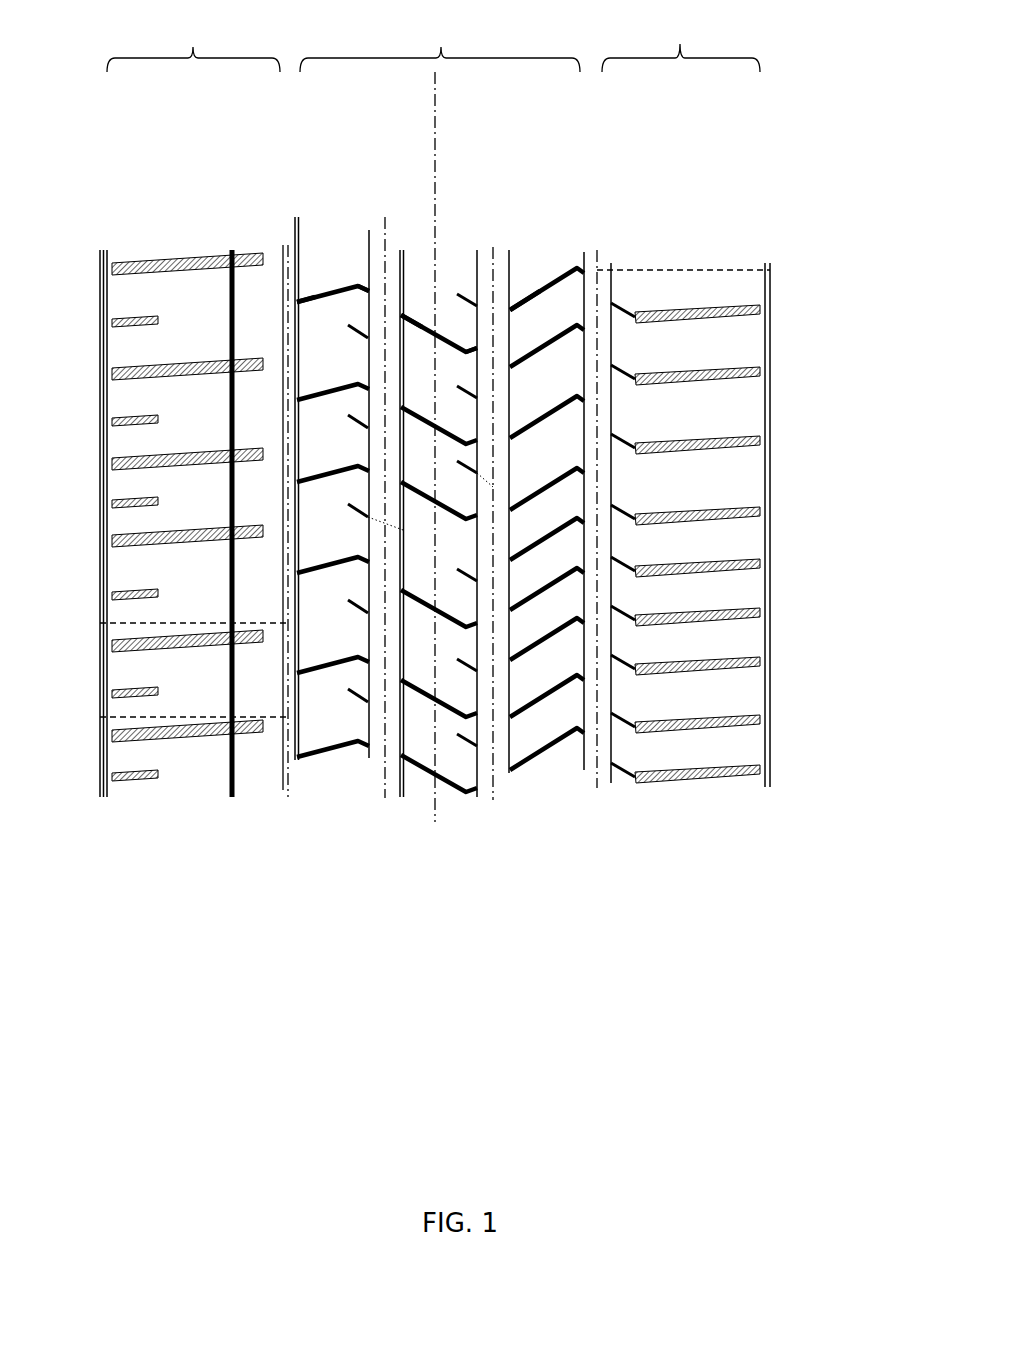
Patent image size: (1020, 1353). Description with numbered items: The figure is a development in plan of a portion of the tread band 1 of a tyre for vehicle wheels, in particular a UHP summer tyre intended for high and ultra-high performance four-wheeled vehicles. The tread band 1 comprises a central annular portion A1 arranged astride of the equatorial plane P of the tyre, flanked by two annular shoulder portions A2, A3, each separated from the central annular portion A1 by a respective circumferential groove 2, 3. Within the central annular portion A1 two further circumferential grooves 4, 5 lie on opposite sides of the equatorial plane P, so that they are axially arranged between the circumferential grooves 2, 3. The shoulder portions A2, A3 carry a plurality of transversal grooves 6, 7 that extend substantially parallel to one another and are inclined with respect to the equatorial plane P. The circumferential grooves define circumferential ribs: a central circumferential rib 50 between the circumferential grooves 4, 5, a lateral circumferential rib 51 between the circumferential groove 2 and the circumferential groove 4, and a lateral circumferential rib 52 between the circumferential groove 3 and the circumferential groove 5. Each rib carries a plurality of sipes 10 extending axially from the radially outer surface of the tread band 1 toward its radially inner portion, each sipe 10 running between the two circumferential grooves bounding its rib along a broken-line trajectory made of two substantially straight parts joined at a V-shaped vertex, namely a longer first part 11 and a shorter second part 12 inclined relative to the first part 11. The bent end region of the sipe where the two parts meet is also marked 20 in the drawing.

The tread band 1 is at (622, 1048).
The circumferential groove 2 is at (598, 805).
The circumferential groove 3 is at (285, 805).
The circumferential groove 4 is at (487, 805).
The circumferential groove 5 is at (387, 805).
The transversal groove 6 is at (680, 310).
The transversal groove 7 is at (177, 258).
The sipe 10 is at (320, 288).
The first part 11 is at (313, 293).
The second part 12 is at (358, 328).
The groove bent portion 20 is at (367, 286).
The central circumferential rib 50 is at (425, 860).
The lateral circumferential rib 51 is at (545, 837).
The lateral circumferential rib 52 is at (330, 848).
The equatorial plane P is at (436, 115).
The central annular portion A1 is at (440, 37).
The annular shoulder portion A2 is at (681, 37).
The annular shoulder portion A3 is at (193, 37).